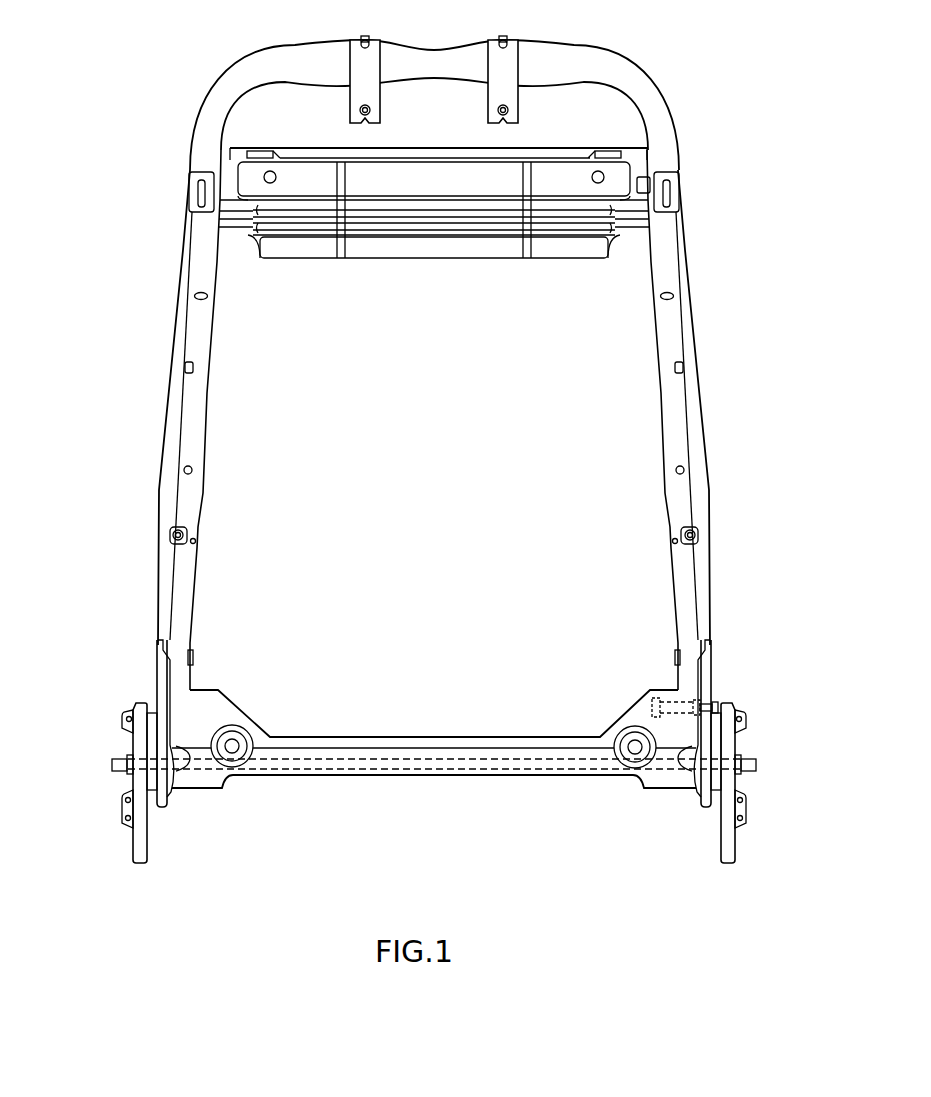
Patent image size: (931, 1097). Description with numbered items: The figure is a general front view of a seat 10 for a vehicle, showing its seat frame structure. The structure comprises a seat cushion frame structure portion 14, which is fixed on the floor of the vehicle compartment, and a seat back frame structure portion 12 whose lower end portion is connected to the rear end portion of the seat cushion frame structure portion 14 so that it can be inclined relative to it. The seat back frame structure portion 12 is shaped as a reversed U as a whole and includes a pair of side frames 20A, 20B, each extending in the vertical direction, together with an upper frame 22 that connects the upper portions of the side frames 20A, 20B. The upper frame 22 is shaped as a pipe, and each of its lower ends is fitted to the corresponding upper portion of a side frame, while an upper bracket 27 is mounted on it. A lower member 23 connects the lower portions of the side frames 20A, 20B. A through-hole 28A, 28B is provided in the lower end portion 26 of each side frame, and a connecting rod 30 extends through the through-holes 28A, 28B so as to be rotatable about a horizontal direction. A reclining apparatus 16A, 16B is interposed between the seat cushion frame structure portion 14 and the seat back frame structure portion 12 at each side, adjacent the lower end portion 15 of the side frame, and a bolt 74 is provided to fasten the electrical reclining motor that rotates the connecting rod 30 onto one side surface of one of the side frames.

The seat 10 is at (737, 440).
The seat back frame structure portion 12 is at (709, 338).
The seat cushion frame structure portion 14 is at (128, 860).
The lower end portion of side frame 15 is at (150, 700).
The reclining apparatus 16A is at (125, 808).
The reclining apparatus 16B is at (740, 808).
The side frame 20A is at (160, 505).
The side frame 20B is at (708, 505).
The upper frame 22 is at (598, 62).
The lower member 23 is at (222, 778).
The lower end portion 26 is at (715, 742).
The upper panel 27 is at (627, 180).
The through-hole 28A is at (186, 770).
The through-hole 28B is at (685, 770).
The connecting rod 30 is at (409, 772).
The bolt 74 is at (690, 700).